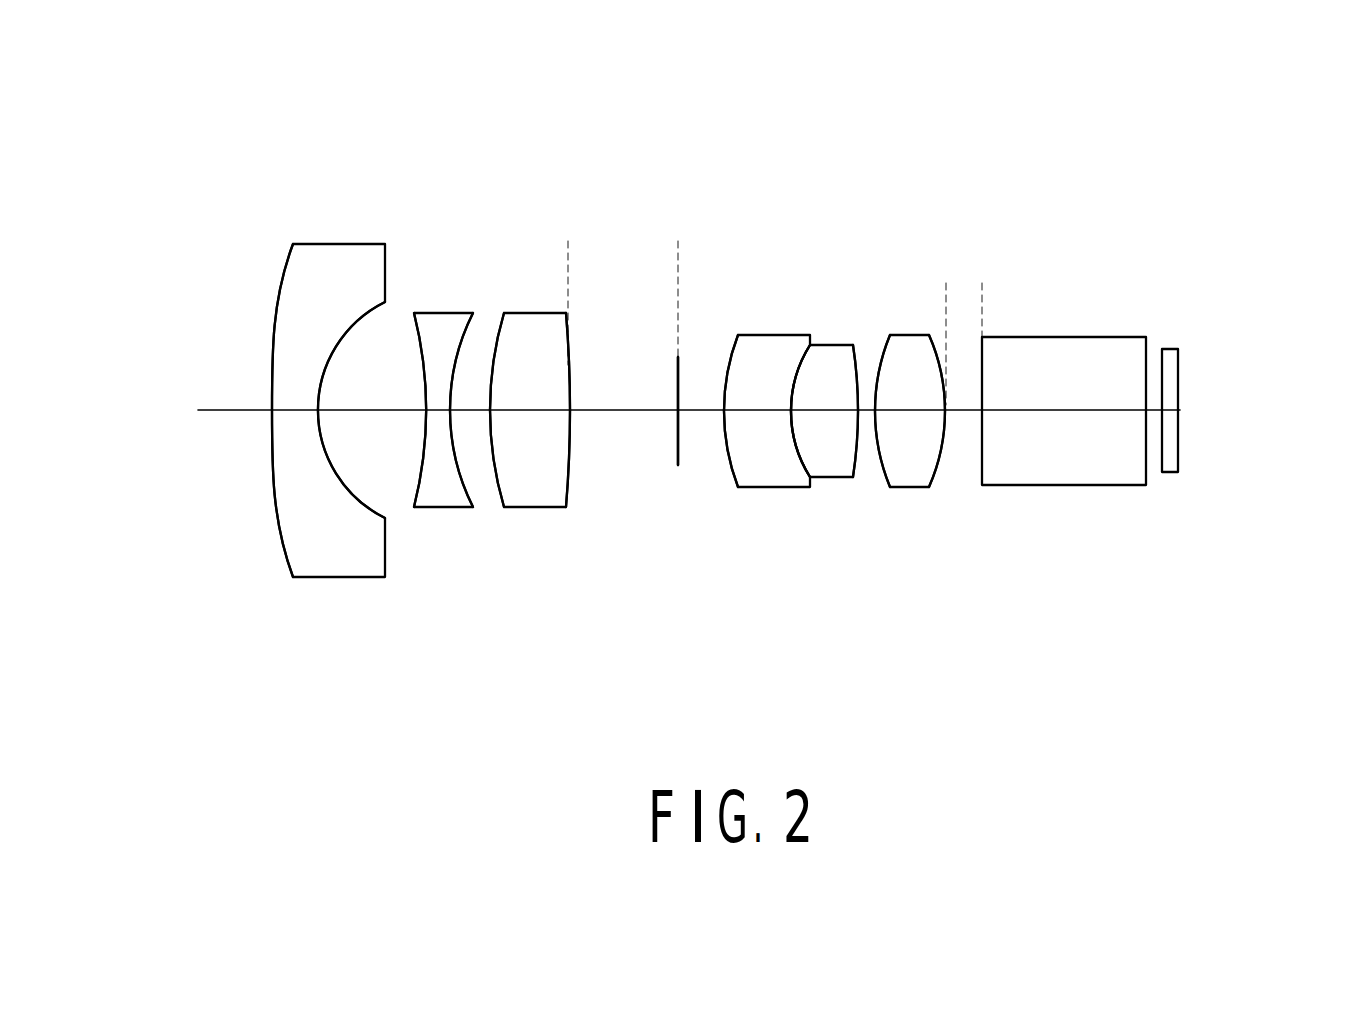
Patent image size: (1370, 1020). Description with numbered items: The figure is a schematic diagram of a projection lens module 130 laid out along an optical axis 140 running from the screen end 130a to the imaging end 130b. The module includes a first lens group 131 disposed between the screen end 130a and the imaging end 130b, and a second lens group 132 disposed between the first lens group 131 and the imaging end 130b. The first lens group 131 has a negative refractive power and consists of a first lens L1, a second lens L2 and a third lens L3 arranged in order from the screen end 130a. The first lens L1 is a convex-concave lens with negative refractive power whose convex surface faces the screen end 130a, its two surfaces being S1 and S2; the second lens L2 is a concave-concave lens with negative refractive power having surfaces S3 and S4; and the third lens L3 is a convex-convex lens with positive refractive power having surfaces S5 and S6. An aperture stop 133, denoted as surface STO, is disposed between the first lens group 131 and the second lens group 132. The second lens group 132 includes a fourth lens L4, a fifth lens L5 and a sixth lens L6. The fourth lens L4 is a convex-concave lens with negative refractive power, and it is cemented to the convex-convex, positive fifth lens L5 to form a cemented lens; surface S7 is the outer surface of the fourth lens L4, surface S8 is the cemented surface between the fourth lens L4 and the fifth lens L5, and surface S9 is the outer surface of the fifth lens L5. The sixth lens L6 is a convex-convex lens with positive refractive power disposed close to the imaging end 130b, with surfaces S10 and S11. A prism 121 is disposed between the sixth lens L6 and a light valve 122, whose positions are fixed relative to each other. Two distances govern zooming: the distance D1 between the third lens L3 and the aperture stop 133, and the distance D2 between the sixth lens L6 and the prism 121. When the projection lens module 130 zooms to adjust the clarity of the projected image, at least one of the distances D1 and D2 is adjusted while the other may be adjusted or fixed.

The projection lens module 130 is at (858, 100).
The first lens group 131 is at (565, 167).
The second lens group 132 is at (927, 167).
The aperture stop 133 is at (680, 365).
The screen end 130a is at (250, 258).
The imaging end 130b is at (1275, 256).
The prism 121 is at (1058, 365).
The light valve 122 is at (1172, 385).
The optical axis 140 is at (233, 413).
The first lens L1 is at (330, 273).
The second lens L2 is at (438, 327).
The third lens L3 is at (530, 325).
The fourth lens L4 is at (748, 363).
The fifth lens L5 is at (816, 363).
The sixth lens L6 is at (897, 363).
The surface of the first lens S1 is at (280, 542).
The surface of the first lens S2 is at (362, 498).
The surface of the second lens S3 is at (410, 492).
The surface of the second lens S4 is at (470, 487).
The surface of the third lens S5 is at (492, 490).
The surface of the third lens S6 is at (572, 483).
The aperture stop surface STO is at (678, 443).
The surface of the fourth lens S7 is at (733, 477).
The cemented surface S8 is at (797, 457).
The surface of the fifth lens S9 is at (857, 465).
The surface of the sixth lens S10 is at (880, 472).
The surface of the sixth lens S11 is at (954, 460).
The distance between the first lens group and the aperture stop D1 is at (678, 234).
The distance between the second lens group and the prism D2 is at (982, 268).